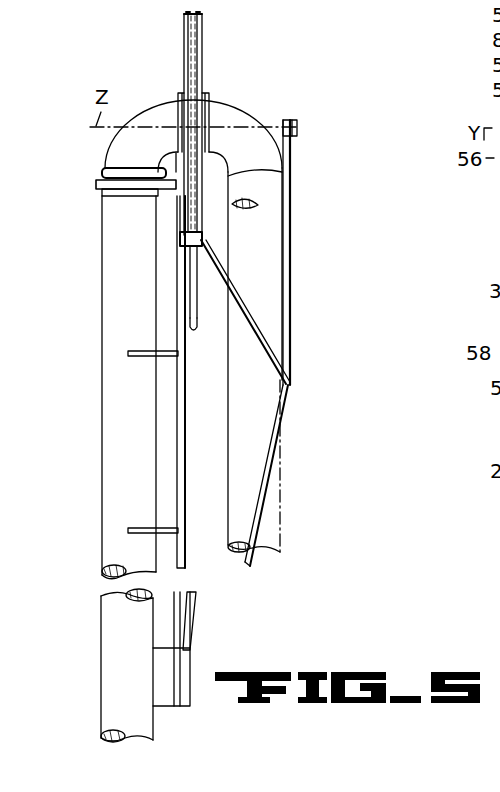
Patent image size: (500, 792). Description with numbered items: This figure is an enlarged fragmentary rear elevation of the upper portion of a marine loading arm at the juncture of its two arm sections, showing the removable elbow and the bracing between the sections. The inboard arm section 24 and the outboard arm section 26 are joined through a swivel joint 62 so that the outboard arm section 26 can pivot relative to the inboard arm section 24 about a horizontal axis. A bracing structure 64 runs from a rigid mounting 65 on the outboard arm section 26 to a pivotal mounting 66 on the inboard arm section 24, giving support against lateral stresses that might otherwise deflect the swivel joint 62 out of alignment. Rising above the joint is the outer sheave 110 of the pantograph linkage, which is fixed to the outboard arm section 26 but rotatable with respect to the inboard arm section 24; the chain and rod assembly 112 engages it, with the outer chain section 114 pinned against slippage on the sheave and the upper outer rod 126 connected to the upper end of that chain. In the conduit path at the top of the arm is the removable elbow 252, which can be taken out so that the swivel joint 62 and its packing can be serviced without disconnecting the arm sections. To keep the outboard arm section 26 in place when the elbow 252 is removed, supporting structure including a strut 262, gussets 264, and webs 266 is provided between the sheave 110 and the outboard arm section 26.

The inboard arm section 24 is at (262, 185).
The outboard arm section 26 is at (98, 446).
The swivel joint 62 is at (209, 98).
The bracing structure 64 is at (292, 296).
The rigid mounting 65 is at (160, 666).
The pivotal mounting 66 is at (298, 126).
The outer sheave 110 is at (202, 54).
The chain and rod assembly 112 is at (182, 290).
The outer chain section 114 is at (197, 73).
The upper outer rod 126 is at (186, 318).
The removable elbow 252 is at (103, 156).
The strut 262 is at (177, 432).
The gussets 264 is at (96, 185).
The webs 266 is at (183, 205).